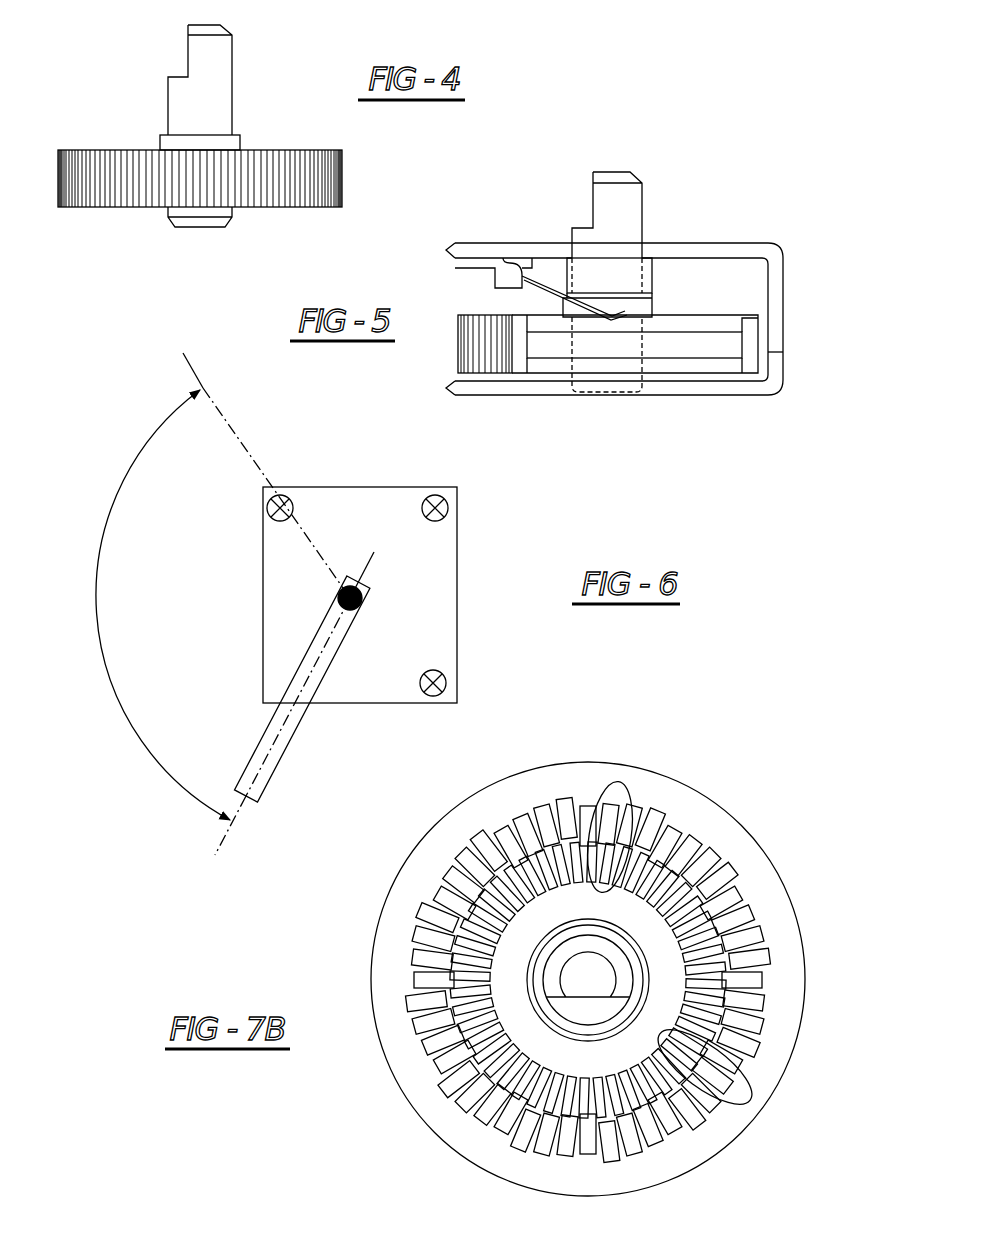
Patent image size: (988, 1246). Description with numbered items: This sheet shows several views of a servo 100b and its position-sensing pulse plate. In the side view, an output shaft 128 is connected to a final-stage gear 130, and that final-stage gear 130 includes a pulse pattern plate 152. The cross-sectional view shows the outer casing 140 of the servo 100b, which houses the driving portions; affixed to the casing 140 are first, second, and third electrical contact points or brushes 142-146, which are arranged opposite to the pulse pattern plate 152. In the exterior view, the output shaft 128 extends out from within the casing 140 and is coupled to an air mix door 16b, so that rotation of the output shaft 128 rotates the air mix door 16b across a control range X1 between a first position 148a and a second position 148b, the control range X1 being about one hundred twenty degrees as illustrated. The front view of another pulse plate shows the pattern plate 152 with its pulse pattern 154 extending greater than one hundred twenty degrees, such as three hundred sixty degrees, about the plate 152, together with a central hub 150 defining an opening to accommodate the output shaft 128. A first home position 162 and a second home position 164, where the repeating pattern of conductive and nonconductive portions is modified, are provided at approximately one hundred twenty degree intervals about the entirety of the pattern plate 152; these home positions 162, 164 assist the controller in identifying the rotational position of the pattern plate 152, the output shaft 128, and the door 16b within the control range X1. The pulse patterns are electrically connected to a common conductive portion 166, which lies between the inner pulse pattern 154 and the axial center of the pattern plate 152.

In FIG. 4, the output shaft 128 is at (213, 62).
In FIG. 5, the output shaft 128 is at (625, 203).
In FIG. 6, the output shaft 128 is at (358, 597).
In FIG. 7B, the output shaft 128 is at (588, 981).
In FIG. 4, the final-stage gear 130 is at (102, 207).
In FIG. 5, the final-stage gear 130 is at (458, 337).
In FIG. 5, the outer casing 140 is at (783, 320).
In FIG. 6, the outer casing 140 is at (443, 543).
In FIG. 5, the electrical contact points or brushes 142-146 is at (553, 283).
In FIG. 5, the pulse pattern plate 152 is at (705, 327).
In FIG. 7B, the pulse pattern plate 152 is at (737, 1158).
In FIG. 6, the first position 148a is at (225, 852).
In FIG. 6, the second position 148b is at (237, 430).
In FIG. 6, the control range X1 is at (75, 635).
In FIG. 6, the air mix door 16b is at (283, 768).
In FIG. 6, the servo 100b is at (457, 652).
In FIG. 7B, the hub 150 is at (648, 917).
In FIG. 7B, the inner pulse pattern 154 is at (701, 837).
In FIG. 7B, the first home position 162 is at (417, 1092).
In FIG. 7B, the second home position 164 is at (585, 847).
In FIG. 7B, the common conductive portion 166 is at (543, 922).